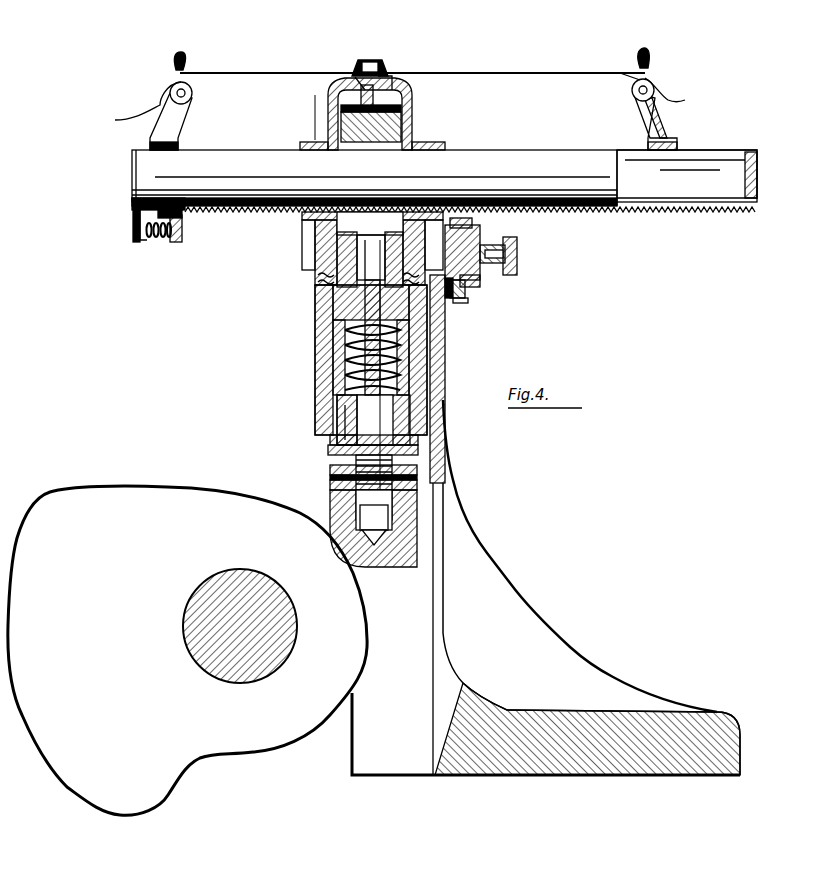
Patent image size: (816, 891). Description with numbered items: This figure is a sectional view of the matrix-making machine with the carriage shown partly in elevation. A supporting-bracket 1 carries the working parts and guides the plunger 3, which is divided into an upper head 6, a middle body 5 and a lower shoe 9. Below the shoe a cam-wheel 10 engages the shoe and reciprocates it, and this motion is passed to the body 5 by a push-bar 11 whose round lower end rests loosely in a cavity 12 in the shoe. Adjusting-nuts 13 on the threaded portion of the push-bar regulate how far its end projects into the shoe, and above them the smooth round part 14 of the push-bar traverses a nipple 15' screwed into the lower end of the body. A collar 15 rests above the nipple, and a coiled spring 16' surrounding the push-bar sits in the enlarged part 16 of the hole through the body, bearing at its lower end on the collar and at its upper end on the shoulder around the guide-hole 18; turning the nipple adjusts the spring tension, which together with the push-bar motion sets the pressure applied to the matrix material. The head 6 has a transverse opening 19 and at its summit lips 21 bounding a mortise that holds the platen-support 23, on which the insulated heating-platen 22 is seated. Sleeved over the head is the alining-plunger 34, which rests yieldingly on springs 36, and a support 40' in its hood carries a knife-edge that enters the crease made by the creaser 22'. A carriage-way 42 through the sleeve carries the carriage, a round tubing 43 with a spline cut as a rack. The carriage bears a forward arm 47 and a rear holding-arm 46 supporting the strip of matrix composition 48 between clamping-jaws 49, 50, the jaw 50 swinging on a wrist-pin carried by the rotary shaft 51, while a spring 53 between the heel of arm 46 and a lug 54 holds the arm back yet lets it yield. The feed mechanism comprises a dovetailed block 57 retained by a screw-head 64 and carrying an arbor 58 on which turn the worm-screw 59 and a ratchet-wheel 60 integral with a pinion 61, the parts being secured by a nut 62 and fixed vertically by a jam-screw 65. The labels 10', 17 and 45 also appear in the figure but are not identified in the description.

The supporting-bracket 1 is at (440, 480).
The plunger 3 is at (320, 425).
The body 5 is at (316, 325).
The head 6 is at (332, 122).
The shoe 9 is at (418, 540).
The cam-wheel 10 is at (187, 650).
The cam notch 10' is at (189, 788).
The push-bar 11 is at (345, 450).
The cavity 12 is at (418, 560).
The adjusting-nuts 13 is at (415, 468).
The smooth round part 14 is at (430, 404).
The collar 15 is at (343, 408).
The nipple 15' is at (287, 420).
The enlarged part 16 is at (454, 379).
The coiled spring 16' is at (317, 357).
The spring 17 is at (345, 372).
The guide-hole 18 is at (365, 260).
The transverse opening 19 is at (405, 228).
The lips 21 is at (410, 104).
The heating-platen 22 is at (301, 115).
The creaser 22' is at (330, 54).
The platen-support 23 is at (392, 78).
The alining-plunger 34 is at (408, 128).
The springs 36 is at (320, 282).
The support 40' is at (380, 44).
The carriage-way 42 is at (375, 235).
The round tubing 43 is at (538, 170).
The bar end 45 is at (650, 208).
The holding-arm 46 is at (186, 125).
The arm 47 is at (668, 118).
The strip of matrix composition 48 is at (458, 70).
The clamping-jaw 49 is at (168, 88).
The clamping-jaw 50 is at (652, 72).
The rotary shaft 51 is at (636, 78).
The spring 53 is at (153, 242).
The lug 54 is at (134, 237).
The dovetailed block 57 is at (482, 230).
The arbor 58 is at (495, 262).
The worm-screw 59 is at (462, 303).
The ratchet-wheel 60 is at (466, 290).
The pinion 61 is at (480, 280).
The nut 62 is at (510, 240).
The screw-head 64 is at (450, 298).
The jam-screw 65 is at (517, 257).